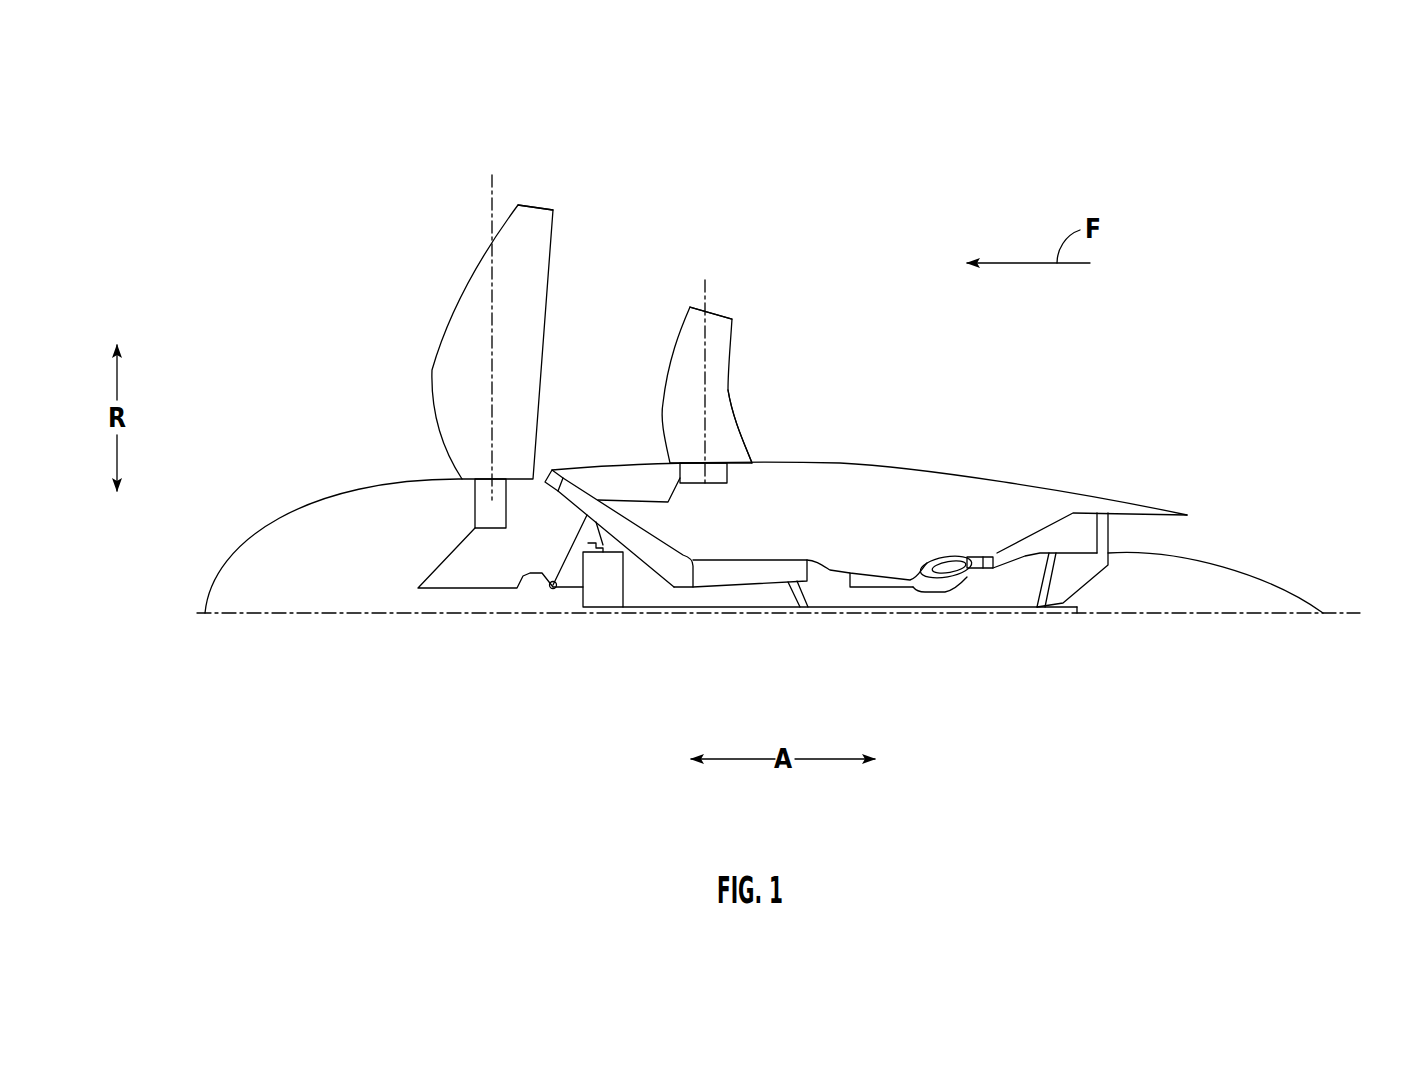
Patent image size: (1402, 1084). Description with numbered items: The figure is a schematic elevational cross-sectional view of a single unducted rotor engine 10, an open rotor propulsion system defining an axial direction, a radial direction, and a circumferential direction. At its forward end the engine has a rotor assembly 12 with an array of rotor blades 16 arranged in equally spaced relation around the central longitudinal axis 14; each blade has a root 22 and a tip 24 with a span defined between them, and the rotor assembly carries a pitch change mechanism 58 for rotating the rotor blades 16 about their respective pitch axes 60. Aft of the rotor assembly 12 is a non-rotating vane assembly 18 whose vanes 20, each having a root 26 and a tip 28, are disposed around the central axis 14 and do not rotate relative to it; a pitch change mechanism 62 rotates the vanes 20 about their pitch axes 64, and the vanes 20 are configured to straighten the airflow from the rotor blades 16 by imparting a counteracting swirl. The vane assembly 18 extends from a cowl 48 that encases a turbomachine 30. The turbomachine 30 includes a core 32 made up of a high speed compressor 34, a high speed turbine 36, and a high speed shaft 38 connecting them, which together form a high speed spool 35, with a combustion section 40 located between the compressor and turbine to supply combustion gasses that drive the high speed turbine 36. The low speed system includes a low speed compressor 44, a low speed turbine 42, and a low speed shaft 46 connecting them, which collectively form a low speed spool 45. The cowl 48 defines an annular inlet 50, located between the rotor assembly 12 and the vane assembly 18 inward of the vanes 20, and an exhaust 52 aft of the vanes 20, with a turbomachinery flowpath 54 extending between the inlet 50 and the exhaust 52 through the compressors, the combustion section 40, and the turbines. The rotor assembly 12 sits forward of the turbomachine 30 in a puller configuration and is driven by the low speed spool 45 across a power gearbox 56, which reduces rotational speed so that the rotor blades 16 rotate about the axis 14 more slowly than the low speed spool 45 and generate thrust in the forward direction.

The single unducted rotor engine 10 is at (742, 181).
The rotor assembly 12 is at (375, 378).
The central longitudinal axis 14 is at (418, 620).
The rotor blades 16 is at (440, 332).
The vane assembly 18 is at (800, 250).
The vanes 20 is at (730, 395).
The root 22 is at (470, 467).
The tip 24 is at (543, 208).
The root 26 is at (729, 450).
The tip 28 is at (720, 313).
The turbomachine 30 is at (910, 423).
The core 32 is at (965, 520).
The high speed compressor 34 is at (883, 580).
The high speed spool 35 is at (908, 596).
The high speed turbine 36 is at (975, 560).
The high speed shaft 38 is at (950, 590).
The combustion section 40 is at (953, 560).
The low speed turbine 42 is at (1073, 521).
The low speed compressor 44 is at (753, 570).
The low speed spool 45 is at (737, 625).
The low speed shaft 46 is at (852, 615).
The cowl 48 is at (1000, 473).
The inlet 50 is at (545, 455).
The exhaust 52 is at (1202, 534).
The turbomachinery flowpath 54 is at (661, 560).
The power gearbox 56 is at (605, 600).
The pitch change mechanism 58 is at (485, 506).
The pitch axes 60 is at (485, 213).
The pitch change mechanism 62 is at (720, 473).
The pitch axes 64 is at (703, 300).